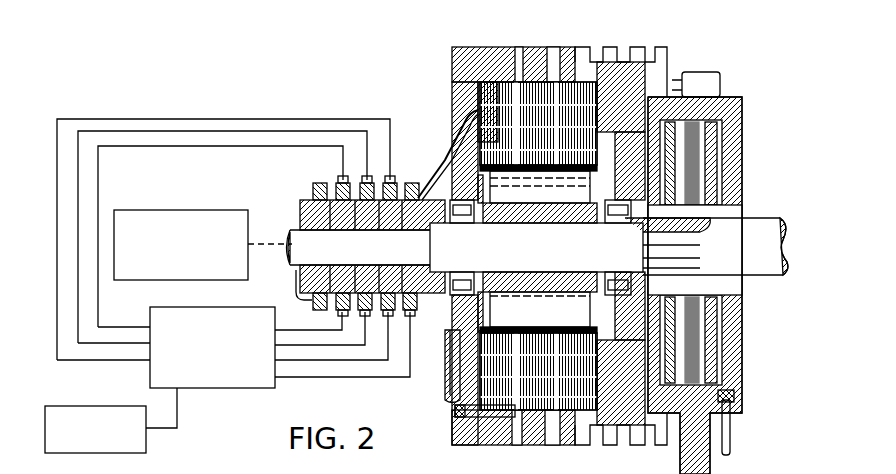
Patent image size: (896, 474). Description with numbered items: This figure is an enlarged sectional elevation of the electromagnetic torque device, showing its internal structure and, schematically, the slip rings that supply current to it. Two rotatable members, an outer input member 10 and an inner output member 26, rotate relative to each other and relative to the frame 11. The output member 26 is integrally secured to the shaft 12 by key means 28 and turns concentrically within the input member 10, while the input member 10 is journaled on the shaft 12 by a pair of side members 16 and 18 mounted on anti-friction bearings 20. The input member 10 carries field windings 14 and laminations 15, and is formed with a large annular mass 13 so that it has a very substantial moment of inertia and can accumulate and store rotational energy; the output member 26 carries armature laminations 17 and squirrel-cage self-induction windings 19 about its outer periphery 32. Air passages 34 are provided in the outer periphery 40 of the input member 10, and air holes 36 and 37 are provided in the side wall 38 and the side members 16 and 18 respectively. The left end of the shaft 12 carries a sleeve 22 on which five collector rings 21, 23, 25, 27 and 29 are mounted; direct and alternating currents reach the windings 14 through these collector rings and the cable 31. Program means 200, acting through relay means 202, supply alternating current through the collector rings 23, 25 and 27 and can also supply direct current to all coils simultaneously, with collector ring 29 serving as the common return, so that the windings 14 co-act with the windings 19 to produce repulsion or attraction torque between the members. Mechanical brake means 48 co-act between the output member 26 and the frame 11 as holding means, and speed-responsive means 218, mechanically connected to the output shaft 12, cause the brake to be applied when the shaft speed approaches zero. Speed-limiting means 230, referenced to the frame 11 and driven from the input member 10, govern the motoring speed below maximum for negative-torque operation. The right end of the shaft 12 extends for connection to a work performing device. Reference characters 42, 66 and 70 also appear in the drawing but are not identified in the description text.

The input member 10 is at (538, 44).
The frame 11 is at (742, 140).
The shaft 12 is at (516, 255).
The large annular mass 13 is at (452, 56).
The field windings 14 is at (667, 70).
The laminations 15 is at (580, 100).
The side member 16 is at (452, 410).
The armature laminations 17 is at (584, 334).
The side member 18 is at (640, 432).
The windings 19 is at (448, 95).
The bearings 20 is at (472, 224).
The collector ring 21 is at (305, 205).
The sleeve 22 is at (300, 282).
The collector ring 23 is at (325, 192).
The collector ring 25 is at (370, 221).
The output member 26 is at (546, 313).
The collector ring 27 is at (390, 222).
The key means 28 is at (538, 222).
The collector ring 29 is at (412, 184).
The cable 31 is at (444, 182).
The outer periphery 32 is at (532, 336).
The air passages 34 is at (512, 441).
The air holes 36 is at (585, 175).
The air holes 37 is at (455, 335).
The side wall 38 is at (560, 172).
The outer periphery 40 is at (497, 52).
The rotor 42 is at (625, 50).
The mechanical brake means 48 is at (700, 345).
The lead 66 is at (147, 471).
The lead 70 is at (189, 471).
The program means 200 is at (98, 406).
The relay means 202 is at (212, 388).
The speed-responsive means 218 is at (204, 210).
The speed-limiting means 230 is at (705, 78).